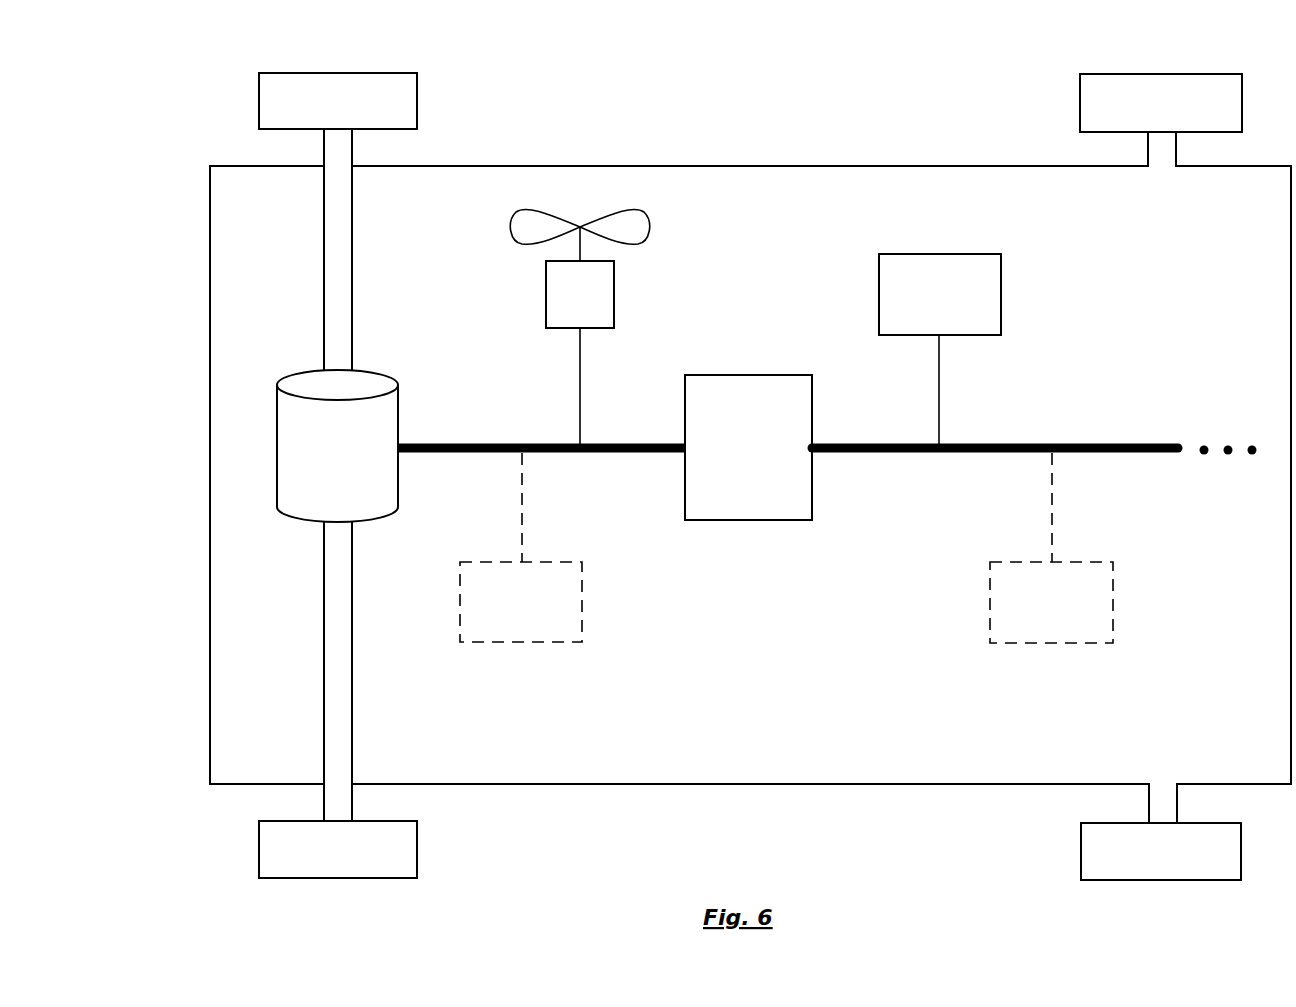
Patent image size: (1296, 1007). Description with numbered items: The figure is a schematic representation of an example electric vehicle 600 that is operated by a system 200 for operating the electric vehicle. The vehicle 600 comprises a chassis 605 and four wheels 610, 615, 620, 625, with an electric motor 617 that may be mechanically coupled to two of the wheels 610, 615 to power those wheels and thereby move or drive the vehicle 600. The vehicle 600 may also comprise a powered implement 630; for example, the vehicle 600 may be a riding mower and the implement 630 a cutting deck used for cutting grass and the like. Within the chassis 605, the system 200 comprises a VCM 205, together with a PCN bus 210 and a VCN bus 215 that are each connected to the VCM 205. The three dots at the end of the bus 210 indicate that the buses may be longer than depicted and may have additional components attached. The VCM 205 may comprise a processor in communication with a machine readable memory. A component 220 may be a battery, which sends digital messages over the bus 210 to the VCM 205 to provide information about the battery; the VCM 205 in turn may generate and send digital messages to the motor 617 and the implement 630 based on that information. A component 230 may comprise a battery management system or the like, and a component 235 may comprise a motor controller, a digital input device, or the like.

The electric vehicle 600 is at (232, 38).
The chassis 605 is at (861, 785).
The wheel 610 is at (417, 101).
The wheel 615 is at (417, 851).
The wheel 620 is at (1080, 103).
The wheel 625 is at (1081, 853).
The electric motor 617 is at (337, 446).
The system 200 is at (1084, 276).
The VCM 205 is at (748, 447).
The PCN bus 210 is at (1137, 453).
The VCN bus 215 is at (447, 453).
The battery 220 is at (940, 349).
The battery management system 230 is at (1051, 548).
The motor controller 235 is at (521, 547).
The powered implement 630 is at (579, 327).